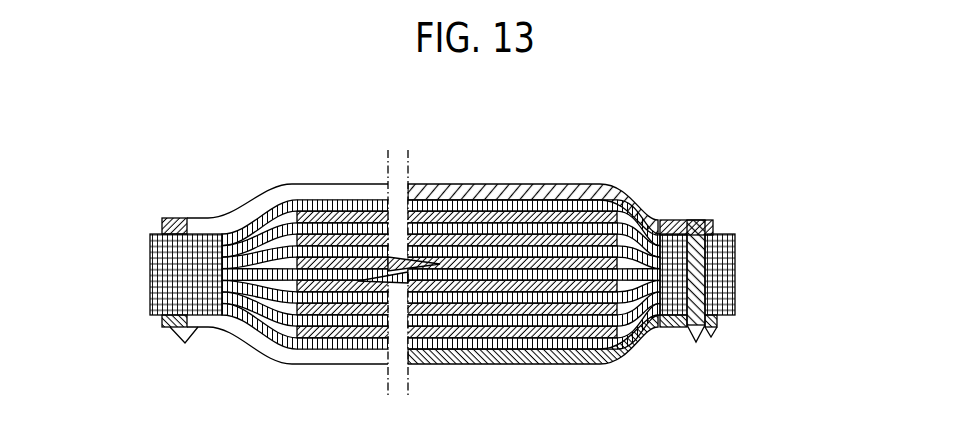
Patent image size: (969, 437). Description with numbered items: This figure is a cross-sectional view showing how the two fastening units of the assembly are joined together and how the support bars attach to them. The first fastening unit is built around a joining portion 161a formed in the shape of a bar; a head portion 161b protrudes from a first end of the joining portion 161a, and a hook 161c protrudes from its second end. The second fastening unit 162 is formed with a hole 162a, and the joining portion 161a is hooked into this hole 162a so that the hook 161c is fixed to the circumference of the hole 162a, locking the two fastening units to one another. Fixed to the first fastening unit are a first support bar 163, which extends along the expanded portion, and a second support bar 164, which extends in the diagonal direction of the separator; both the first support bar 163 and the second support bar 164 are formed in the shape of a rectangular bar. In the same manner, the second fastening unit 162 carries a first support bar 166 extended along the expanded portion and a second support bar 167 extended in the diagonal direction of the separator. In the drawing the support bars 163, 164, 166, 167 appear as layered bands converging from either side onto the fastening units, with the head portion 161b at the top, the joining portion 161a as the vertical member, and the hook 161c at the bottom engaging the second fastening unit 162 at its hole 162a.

The joining portion 161a is at (700, 274).
The head portion 161b is at (697, 221).
The hook 161c is at (688, 334).
The second fastening unit 162 is at (718, 323).
The hole 162a is at (703, 341).
The first support bar 163 is at (173, 218).
The second support bar 164 is at (472, 186).
The first support bar 166 is at (164, 328).
The second support bar 167 is at (618, 362).